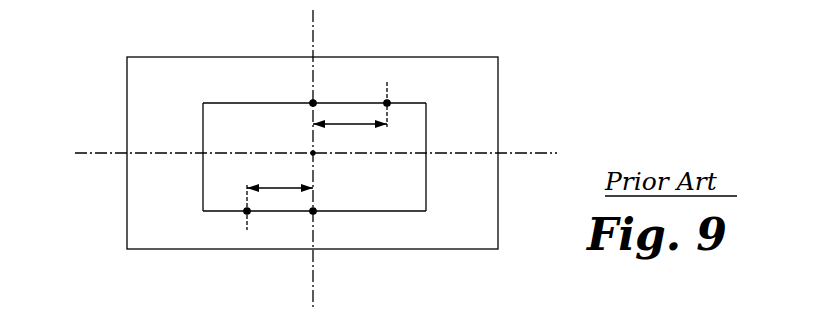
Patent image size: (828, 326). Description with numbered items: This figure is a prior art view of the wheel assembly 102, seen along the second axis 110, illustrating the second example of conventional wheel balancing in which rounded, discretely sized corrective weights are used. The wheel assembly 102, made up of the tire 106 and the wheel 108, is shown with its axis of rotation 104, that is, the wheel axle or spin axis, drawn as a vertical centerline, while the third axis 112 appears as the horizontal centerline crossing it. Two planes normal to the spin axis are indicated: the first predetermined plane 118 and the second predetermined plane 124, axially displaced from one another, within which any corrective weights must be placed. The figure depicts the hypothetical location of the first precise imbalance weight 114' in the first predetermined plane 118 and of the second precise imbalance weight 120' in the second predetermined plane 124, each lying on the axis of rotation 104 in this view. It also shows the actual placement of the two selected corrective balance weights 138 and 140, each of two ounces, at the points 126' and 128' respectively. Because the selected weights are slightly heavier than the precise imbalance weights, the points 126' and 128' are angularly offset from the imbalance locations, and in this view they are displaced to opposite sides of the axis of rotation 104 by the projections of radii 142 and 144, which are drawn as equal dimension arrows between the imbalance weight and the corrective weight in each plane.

The wheel assembly 102 is at (547, 76).
The axis of rotation 104 is at (308, 287).
The tire 106 is at (397, 249).
The wheel 108 is at (426, 140).
The second axis 110 is at (316, 156).
The third axis 112 is at (82, 153).
The first precise imbalance weight 114' is at (344, 69).
The first predetermined plane 118 is at (227, 102).
The second precise imbalance weight 120' is at (341, 246).
The second predetermined plane 124 is at (377, 211).
The point 126' is at (440, 79).
The selected corrective balance weight 138 is at (389, 101).
The point 128' is at (162, 237).
The selected corrective balance weight 140 is at (245, 213).
The projection of radius 142 is at (343, 120).
The projection of radius 144 is at (288, 190).